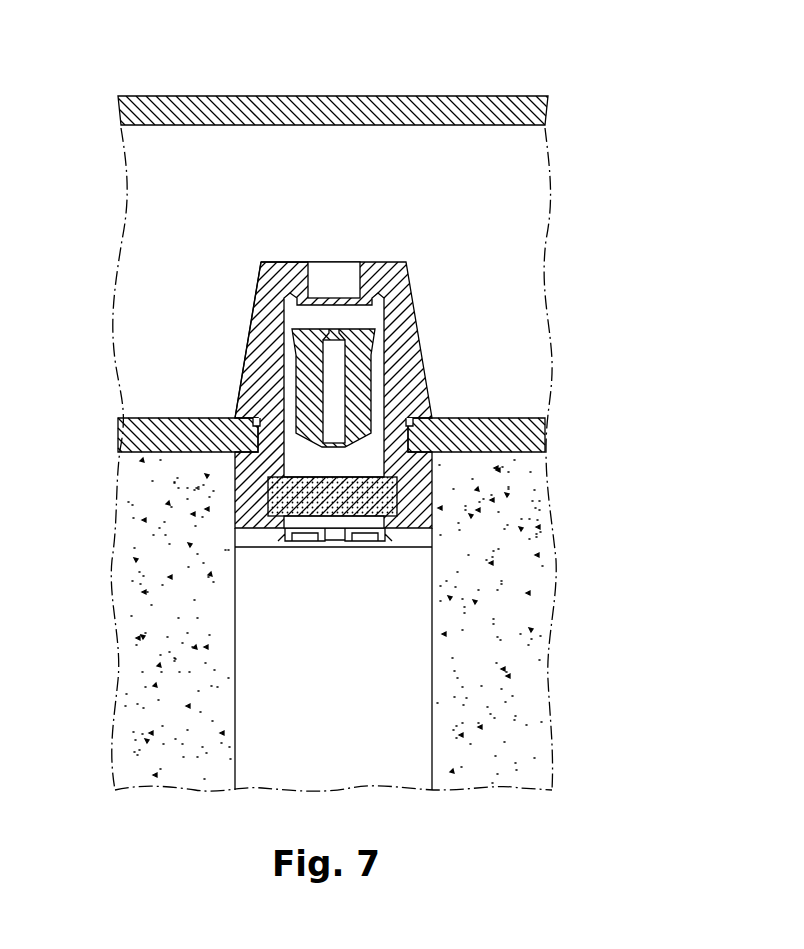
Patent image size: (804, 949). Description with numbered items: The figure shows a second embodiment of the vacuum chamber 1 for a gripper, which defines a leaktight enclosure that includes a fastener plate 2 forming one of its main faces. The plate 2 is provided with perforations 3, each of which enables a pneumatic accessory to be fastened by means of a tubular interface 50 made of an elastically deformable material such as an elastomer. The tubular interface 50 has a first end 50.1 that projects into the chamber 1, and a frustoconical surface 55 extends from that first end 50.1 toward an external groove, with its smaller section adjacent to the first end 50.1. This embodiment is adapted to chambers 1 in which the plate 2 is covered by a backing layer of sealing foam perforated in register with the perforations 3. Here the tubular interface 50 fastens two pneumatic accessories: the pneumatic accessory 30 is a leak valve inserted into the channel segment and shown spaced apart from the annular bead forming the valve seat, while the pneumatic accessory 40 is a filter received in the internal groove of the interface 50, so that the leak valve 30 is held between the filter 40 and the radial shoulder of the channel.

The vacuum chamber 1 is at (168, 108).
The fastener plate 2 is at (150, 412).
The perforations 3 is at (412, 416).
The pneumatic accessory 30 is at (305, 380).
The pneumatic accessory 40 is at (272, 493).
The tubular interface 50 is at (420, 280).
The first end 50.1 is at (282, 262).
The frustoconical surface 55 is at (247, 305).